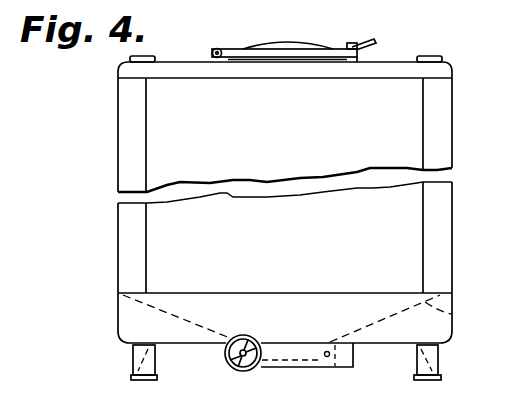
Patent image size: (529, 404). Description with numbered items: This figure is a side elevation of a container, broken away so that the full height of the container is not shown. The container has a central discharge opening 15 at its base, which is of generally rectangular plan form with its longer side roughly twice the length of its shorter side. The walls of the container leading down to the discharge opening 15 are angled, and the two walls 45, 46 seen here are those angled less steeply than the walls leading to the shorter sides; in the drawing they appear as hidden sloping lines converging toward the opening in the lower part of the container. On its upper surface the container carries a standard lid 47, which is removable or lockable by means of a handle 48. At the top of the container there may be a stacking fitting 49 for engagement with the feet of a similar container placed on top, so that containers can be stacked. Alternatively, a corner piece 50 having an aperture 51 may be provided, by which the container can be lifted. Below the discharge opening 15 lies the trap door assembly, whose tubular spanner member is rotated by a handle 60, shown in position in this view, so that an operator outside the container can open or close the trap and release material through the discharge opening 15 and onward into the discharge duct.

The discharge opening 15 is at (290, 358).
The wall leading to the discharge opening 45 is at (452, 317).
The wall leading to the discharge opening 46 is at (197, 322).
The lid 47 is at (270, 49).
The handle 48 is at (357, 50).
The stacking fitting 49 is at (143, 57).
The corner piece 50 is at (132, 360).
The aperture 51 is at (438, 358).
The handle 60 is at (238, 369).